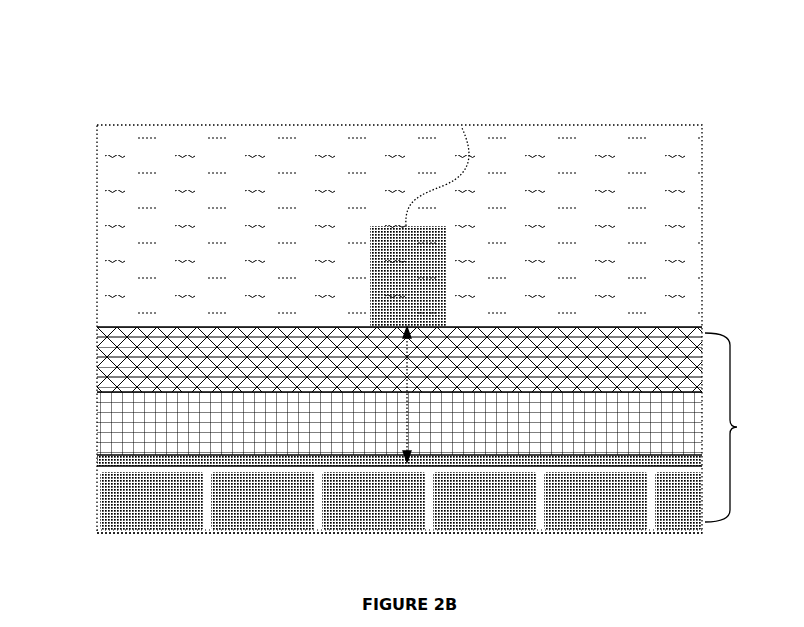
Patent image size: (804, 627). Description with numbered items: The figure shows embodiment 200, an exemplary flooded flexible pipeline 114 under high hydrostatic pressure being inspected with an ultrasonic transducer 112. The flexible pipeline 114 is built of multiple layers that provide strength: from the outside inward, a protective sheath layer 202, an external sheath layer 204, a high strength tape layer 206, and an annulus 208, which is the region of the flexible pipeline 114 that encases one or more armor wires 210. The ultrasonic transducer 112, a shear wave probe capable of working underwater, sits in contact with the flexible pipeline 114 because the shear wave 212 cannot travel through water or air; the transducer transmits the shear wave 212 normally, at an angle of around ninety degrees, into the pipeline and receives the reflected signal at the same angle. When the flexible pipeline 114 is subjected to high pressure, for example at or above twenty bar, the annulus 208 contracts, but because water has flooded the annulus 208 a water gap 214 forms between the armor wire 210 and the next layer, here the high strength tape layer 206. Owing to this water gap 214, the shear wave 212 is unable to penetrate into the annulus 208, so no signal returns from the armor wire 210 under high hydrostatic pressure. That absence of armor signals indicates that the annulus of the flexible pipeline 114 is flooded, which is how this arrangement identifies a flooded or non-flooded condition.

The embodiment 200 is at (72, 82).
The ultrasonic transducer 112 is at (430, 262).
The flexible pipeline 114 is at (737, 427).
The protective sheath layer 202 is at (112, 350).
The external sheath layer 204 is at (112, 405).
The high strength tape layer 206 is at (112, 460).
The annulus 208 is at (112, 527).
The armor wire 210 is at (180, 508).
The shear wave 212 is at (410, 353).
The water gap 214 is at (412, 472).